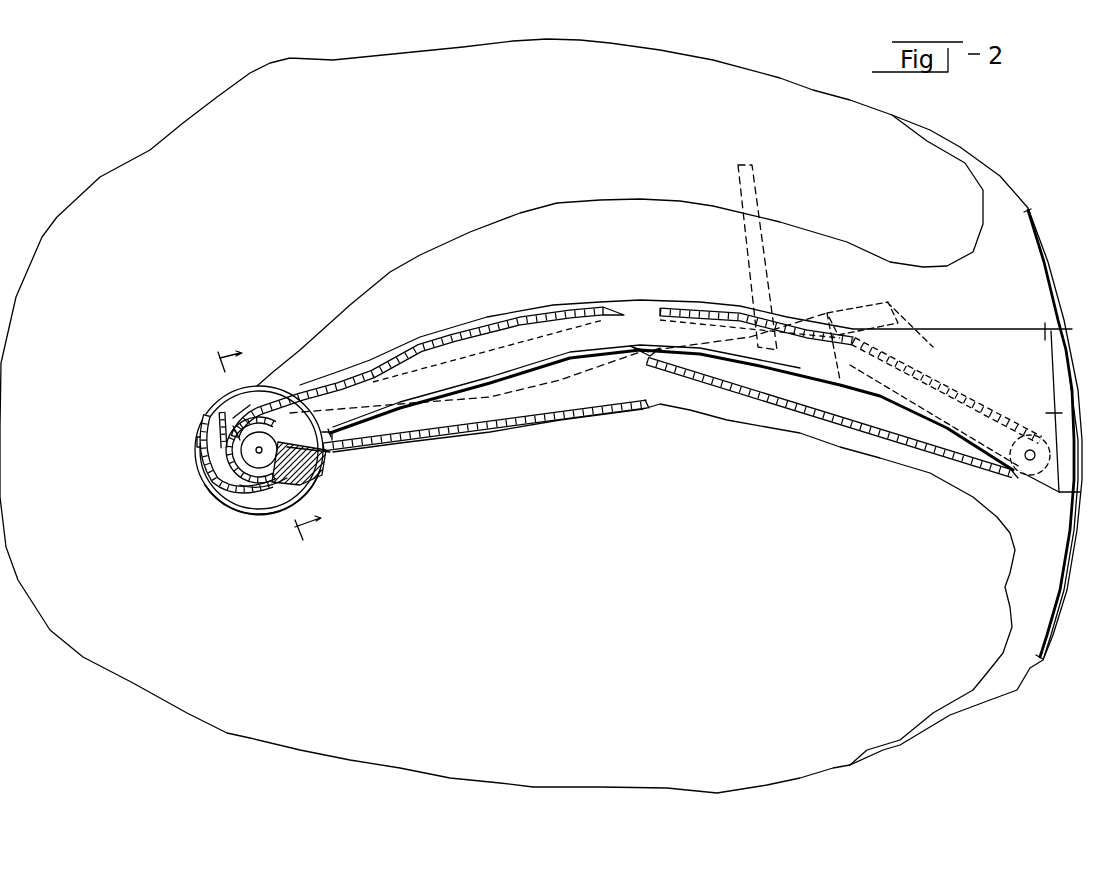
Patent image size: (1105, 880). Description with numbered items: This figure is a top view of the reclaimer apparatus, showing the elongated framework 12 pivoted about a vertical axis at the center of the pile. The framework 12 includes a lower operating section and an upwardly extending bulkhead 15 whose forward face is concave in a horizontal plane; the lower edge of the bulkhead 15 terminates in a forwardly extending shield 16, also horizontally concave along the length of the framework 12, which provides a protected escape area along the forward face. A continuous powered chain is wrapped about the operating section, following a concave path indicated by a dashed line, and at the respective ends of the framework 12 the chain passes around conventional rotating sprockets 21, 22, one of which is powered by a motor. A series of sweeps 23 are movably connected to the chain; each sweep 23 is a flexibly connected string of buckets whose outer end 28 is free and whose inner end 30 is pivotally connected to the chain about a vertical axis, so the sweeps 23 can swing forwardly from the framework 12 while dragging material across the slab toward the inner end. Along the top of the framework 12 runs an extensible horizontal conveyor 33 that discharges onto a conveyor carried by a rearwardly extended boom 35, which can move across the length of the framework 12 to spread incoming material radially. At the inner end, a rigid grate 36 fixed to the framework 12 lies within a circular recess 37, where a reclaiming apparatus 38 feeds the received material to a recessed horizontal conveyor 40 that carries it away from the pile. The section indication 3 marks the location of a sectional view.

The section line 3- 3 is at (259, 449).
The elongated framework 12 is at (630, 292).
The bulkhead 15 is at (574, 360).
The shield 16 is at (847, 385).
The rotating sprocket 21 is at (274, 441).
The rotating sprocket 22 is at (1020, 449).
The sweep 23 is at (466, 330).
The outer end of the string 28 is at (639, 407).
The inner end of the string 30 is at (657, 352).
The extensible horizontal conveyor 33 is at (524, 387).
The rearwardly extended boom 35 is at (762, 254).
The grate 36 is at (292, 481).
The circular recess 37 is at (270, 517).
The reclaiming apparatus 38 is at (227, 491).
The recessed horizontal conveyor 40 is at (214, 443).